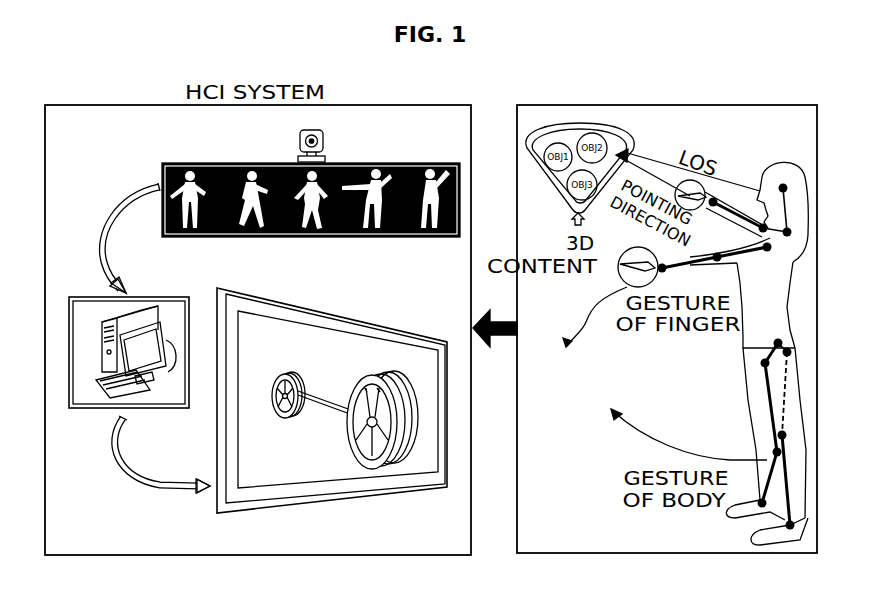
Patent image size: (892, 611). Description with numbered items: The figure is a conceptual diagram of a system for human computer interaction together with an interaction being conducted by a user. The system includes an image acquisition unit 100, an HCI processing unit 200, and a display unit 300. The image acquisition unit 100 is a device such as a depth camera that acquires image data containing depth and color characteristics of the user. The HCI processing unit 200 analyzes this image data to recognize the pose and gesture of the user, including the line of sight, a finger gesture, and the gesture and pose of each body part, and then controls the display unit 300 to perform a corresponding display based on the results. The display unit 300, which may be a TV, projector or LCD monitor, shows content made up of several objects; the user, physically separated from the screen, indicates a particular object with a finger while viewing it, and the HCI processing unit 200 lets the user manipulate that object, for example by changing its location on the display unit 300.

The image acquisition unit 100 is at (323, 130).
The HCI processing unit 200 is at (98, 296).
The display unit 300 is at (367, 497).